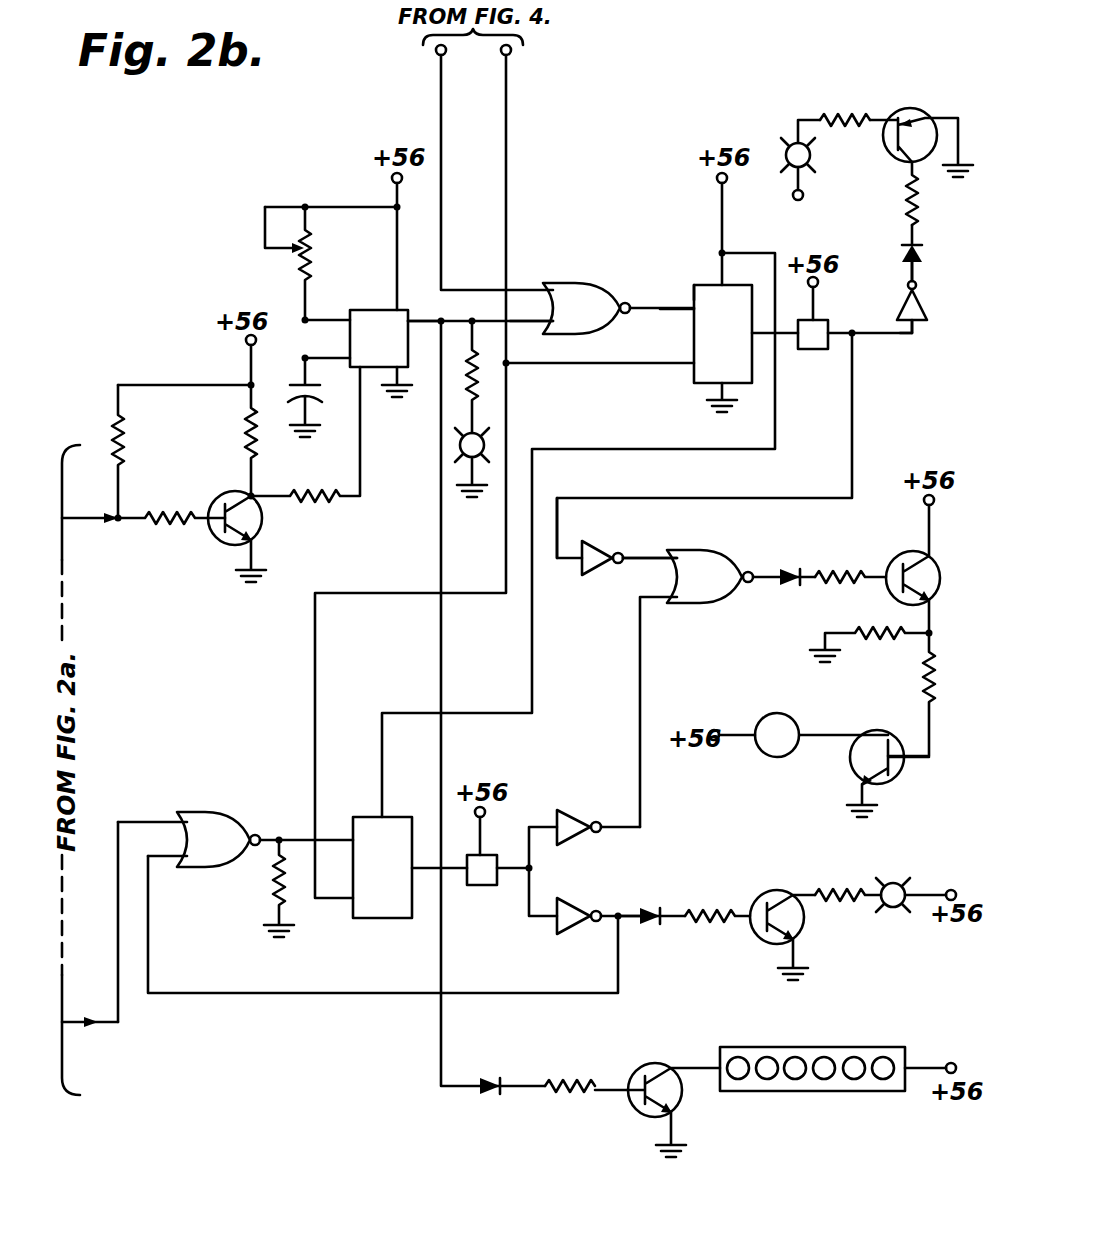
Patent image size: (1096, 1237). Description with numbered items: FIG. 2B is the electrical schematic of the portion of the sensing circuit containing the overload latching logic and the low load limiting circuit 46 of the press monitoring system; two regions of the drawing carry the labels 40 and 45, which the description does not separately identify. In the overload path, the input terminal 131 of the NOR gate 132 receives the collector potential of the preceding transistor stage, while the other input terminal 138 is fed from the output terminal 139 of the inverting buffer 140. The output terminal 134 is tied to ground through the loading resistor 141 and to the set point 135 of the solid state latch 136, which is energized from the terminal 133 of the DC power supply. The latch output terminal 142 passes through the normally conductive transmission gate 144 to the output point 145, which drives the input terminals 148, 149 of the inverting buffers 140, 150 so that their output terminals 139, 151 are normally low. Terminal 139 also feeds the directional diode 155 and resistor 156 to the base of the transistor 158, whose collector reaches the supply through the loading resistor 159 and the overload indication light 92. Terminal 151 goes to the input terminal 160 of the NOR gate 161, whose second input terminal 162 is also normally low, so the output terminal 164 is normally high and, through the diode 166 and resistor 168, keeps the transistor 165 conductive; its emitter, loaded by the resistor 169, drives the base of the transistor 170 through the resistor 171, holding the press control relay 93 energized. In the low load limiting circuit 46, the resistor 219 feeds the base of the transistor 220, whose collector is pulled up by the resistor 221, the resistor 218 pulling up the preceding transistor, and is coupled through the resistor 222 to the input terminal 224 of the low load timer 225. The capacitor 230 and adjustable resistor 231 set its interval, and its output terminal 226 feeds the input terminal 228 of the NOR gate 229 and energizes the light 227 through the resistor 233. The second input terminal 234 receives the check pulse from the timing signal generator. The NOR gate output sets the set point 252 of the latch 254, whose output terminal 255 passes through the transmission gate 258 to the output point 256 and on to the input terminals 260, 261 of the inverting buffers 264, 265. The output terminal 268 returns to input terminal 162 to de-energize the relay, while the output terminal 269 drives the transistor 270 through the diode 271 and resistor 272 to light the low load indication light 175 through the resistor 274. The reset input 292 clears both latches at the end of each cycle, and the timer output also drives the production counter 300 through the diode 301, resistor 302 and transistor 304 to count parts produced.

The alarm indicator circuit 40 is at (728, 102).
The control circuit 45 is at (227, 1001).
The low load limiting circuit 46 is at (197, 302).
The overload indication light 92 is at (897, 882).
The press control relay 93 is at (776, 712).
The input terminal 131 is at (172, 820).
The NOR gate 132 is at (219, 812).
The terminal 133 is at (722, 253).
The output terminal 134 is at (257, 835).
The set point 135 is at (342, 835).
The solid state latch 136 is at (395, 817).
The input terminal 138 is at (171, 863).
The output terminal 139 is at (614, 907).
The inverting buffer 140 is at (573, 940).
The loading resistor 141 is at (274, 878).
The latch output terminal 142 is at (418, 870).
The transmission gate 144 is at (475, 885).
The output point 145 is at (531, 868).
The input terminal 148 is at (552, 933).
The input terminal 149 is at (537, 821).
The inverting buffer 150 is at (585, 812).
The output terminal 151 is at (598, 830).
The directional diode 155 is at (647, 925).
The resistor 156 is at (713, 900).
The transistor 158 is at (798, 917).
The loading resistor 159 is at (833, 888).
The input terminal 160 is at (672, 602).
The NOR gate 161 is at (707, 551).
The second input terminal 162 is at (664, 562).
The output terminal 164 is at (750, 570).
The transistor 165 is at (905, 550).
The diode 166 is at (786, 585).
The resistor 168 is at (835, 568).
The resistor 169 is at (865, 638).
The transistor 170 is at (857, 765).
The resistor 171 is at (928, 683).
The low load indication light 175 is at (813, 163).
The resistor 218 is at (128, 440).
The resistor 219 is at (170, 528).
The transistor 220 is at (230, 550).
The resistor 221 is at (248, 435).
The resistor 222 is at (320, 500).
The input terminal 224 is at (373, 390).
The low load timer 225 is at (360, 308).
The output terminal 226 is at (428, 321).
The light 227 is at (483, 432).
The input terminal 228 is at (512, 326).
The NOR gate 229 is at (588, 282).
The capacitor 230 is at (290, 390).
The adjustable resistor 231 is at (293, 264).
The resistor 233 is at (476, 376).
The second input terminal 234 is at (436, 84).
The set point 252 is at (686, 315).
The solid state latch 254 is at (694, 290).
The output terminal 255 is at (752, 333).
The output point 256 is at (858, 340).
The transmission gate 258 is at (815, 353).
The input terminal 260 is at (559, 564).
The input terminal 261 is at (916, 336).
The inverting buffer 264 is at (606, 543).
The inverting buffer 265 is at (898, 307).
The output terminal 268 is at (620, 552).
The output terminal 269 is at (915, 284).
The transistor 270 is at (913, 108).
The diode 271 is at (900, 254).
The resistor 272 is at (905, 202).
The resistor 274 is at (840, 120).
The reset input 292 is at (508, 86).
The production counter 300 is at (828, 1047).
The diode 301 is at (480, 1092).
The resistor 302 is at (580, 1098).
The transistor 304 is at (640, 1067).